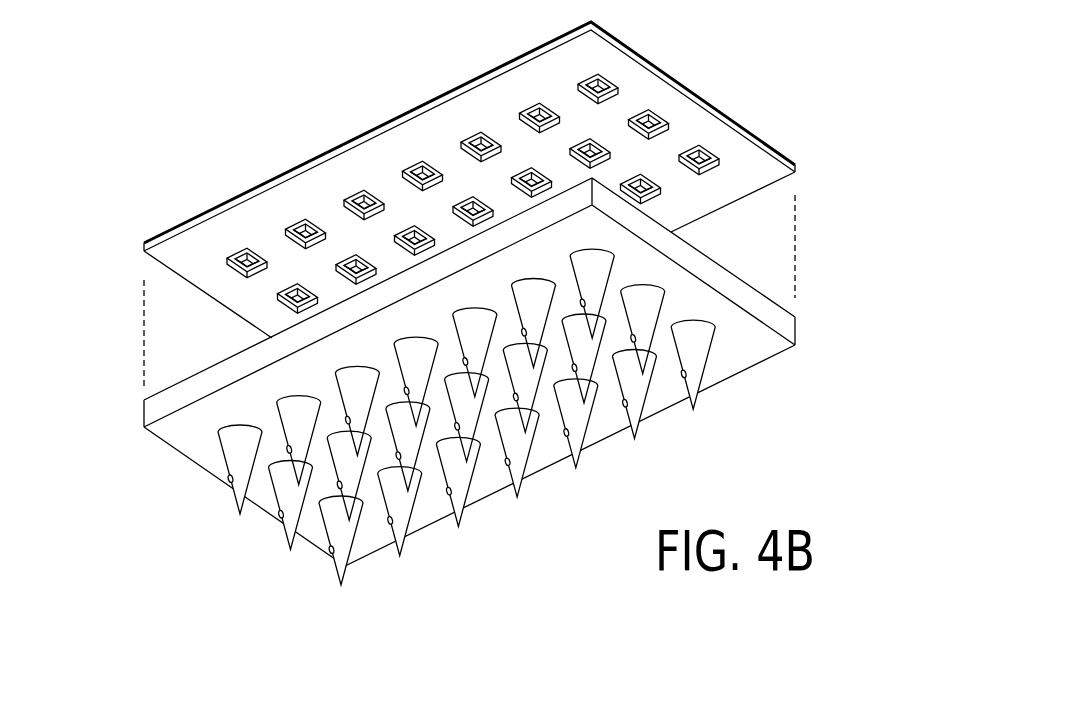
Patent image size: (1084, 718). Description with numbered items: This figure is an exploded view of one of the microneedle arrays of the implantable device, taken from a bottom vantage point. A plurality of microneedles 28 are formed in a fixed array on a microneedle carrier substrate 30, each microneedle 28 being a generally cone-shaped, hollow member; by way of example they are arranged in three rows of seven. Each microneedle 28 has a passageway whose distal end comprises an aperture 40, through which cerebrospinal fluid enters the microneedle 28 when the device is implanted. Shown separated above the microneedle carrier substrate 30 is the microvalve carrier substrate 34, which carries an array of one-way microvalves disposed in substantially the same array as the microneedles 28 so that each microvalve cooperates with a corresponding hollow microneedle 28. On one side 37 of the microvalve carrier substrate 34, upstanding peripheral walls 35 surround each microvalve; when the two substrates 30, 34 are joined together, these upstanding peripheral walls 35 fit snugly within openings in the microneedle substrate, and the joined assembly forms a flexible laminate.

The microneedle 28 is at (533, 460).
The microneedle carrier substrate 30 is at (772, 323).
The microvalve carrier substrate 34 is at (728, 113).
The upstanding peripheral walls 35 is at (613, 80).
The side of the microvalve substrate 37 is at (742, 172).
The aperture 40 is at (332, 553).